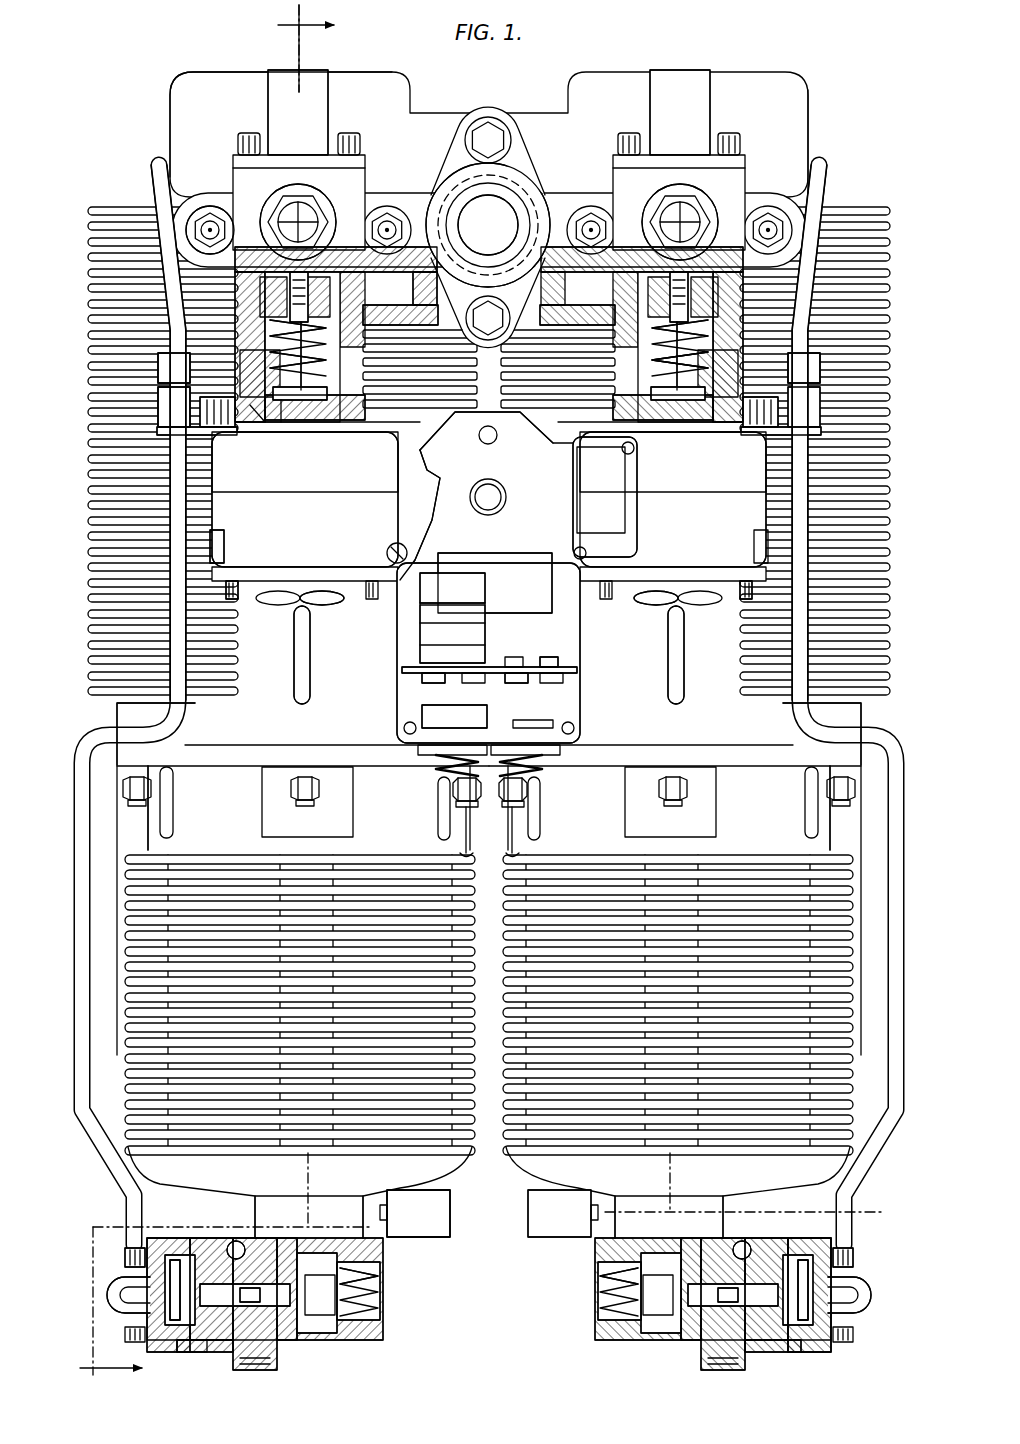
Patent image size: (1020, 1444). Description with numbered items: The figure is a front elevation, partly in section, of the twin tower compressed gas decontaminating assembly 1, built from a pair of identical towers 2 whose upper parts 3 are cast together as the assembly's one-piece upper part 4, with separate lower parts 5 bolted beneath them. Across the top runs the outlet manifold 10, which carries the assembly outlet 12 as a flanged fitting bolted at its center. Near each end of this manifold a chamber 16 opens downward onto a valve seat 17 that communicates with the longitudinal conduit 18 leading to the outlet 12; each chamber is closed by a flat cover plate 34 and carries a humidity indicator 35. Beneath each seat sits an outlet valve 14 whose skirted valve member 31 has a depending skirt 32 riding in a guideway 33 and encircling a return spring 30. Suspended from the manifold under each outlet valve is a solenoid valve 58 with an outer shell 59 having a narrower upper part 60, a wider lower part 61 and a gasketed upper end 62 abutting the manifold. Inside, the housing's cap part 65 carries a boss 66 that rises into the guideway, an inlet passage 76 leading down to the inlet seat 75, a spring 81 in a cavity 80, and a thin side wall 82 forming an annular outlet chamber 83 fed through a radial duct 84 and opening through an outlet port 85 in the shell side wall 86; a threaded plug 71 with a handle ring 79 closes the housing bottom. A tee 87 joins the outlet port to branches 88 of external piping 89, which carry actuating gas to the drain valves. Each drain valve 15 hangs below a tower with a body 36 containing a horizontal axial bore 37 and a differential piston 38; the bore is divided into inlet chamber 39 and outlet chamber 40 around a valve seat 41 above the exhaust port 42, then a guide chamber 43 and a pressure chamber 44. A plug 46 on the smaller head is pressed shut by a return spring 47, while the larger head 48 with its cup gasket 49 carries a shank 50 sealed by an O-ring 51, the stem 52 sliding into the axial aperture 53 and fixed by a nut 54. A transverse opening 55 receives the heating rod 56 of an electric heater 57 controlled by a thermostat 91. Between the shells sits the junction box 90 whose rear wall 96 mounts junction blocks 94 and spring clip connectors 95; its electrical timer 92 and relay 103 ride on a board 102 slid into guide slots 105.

The twin tower compressed gas decontaminating assembly 1 is at (806, 111).
The tower 2 is at (905, 470).
The upper part of tower 3 is at (115, 716).
The integral upper part 4 is at (404, 77).
The lower part of tower 5 is at (140, 815).
The outlet manifold 10 is at (424, 438).
The outlet 12 is at (476, 236).
The outlet valve 14 is at (340, 312).
The drain valve 15 is at (345, 1350).
The chamber 16 is at (262, 215).
The valve seat 17 is at (235, 300).
The conduit 18 is at (406, 287).
The return spring 30 is at (362, 312).
The valve member 31 is at (342, 284).
The skirt 32 is at (237, 353).
The guideway 33 is at (252, 331).
The cover plate 34 is at (305, 157).
The humidity indicator 35 is at (322, 210).
The body 36 is at (205, 1240).
The axial bore 37 is at (215, 1335).
The differential piston 38 is at (255, 1285).
The inlet chamber 39 is at (320, 1265).
The outlet chamber 40 is at (262, 1330).
The valve seat 41 is at (300, 1340).
The exhaust port 42 is at (245, 1352).
The guide chamber 43 is at (812, 1340).
The pressure chamber 44 is at (210, 1352).
The plug 46 is at (372, 1270).
The return spring 47 is at (378, 1296).
The larger head 48 is at (128, 1312).
The cup gasket 49 is at (128, 1262).
The shank 50 is at (172, 1245).
The O-ring 51 is at (222, 1250).
The stem 52 is at (172, 1296).
The axial aperture 53 is at (243, 1243).
The nut 54 is at (280, 1290).
The transverse opening 55 is at (255, 1238).
The heating rod 56 is at (370, 1200).
The electric heater 57 is at (450, 1235).
The solenoid valve 58 is at (267, 508).
The outer shell 59 is at (214, 496).
The upper part of shell 60 is at (258, 479).
The lower part of shell 61 is at (222, 470).
The upper end of shell 62 is at (372, 322).
The cap part 65 is at (612, 452).
The boss 66 is at (606, 362).
The threaded plug 71 is at (322, 598).
The inlet seat 75 is at (305, 410).
The inlet passage 76 is at (360, 380).
The ring 79 is at (300, 650).
The cavity 80 is at (290, 440).
The spring 81 is at (281, 425).
The side wall 82 is at (370, 425).
The annular outlet chamber 83 is at (262, 422).
The radial duct 84 is at (248, 382).
The outlet port 85 is at (232, 436).
The side wall of shell 86 is at (155, 378).
The tee 87 is at (158, 405).
The branch 88 is at (830, 292).
The external piping 89 is at (152, 316).
The junction box 90 is at (360, 516).
The thermostat 91 is at (440, 1192).
The electrical timer 92 is at (492, 695).
The junction block 94 is at (541, 554).
The spring clip connector 95 is at (438, 683).
The rear wall 96 is at (528, 473).
The board 102 is at (498, 665).
The relay 103 is at (437, 591).
The guide slot 105 is at (428, 665).